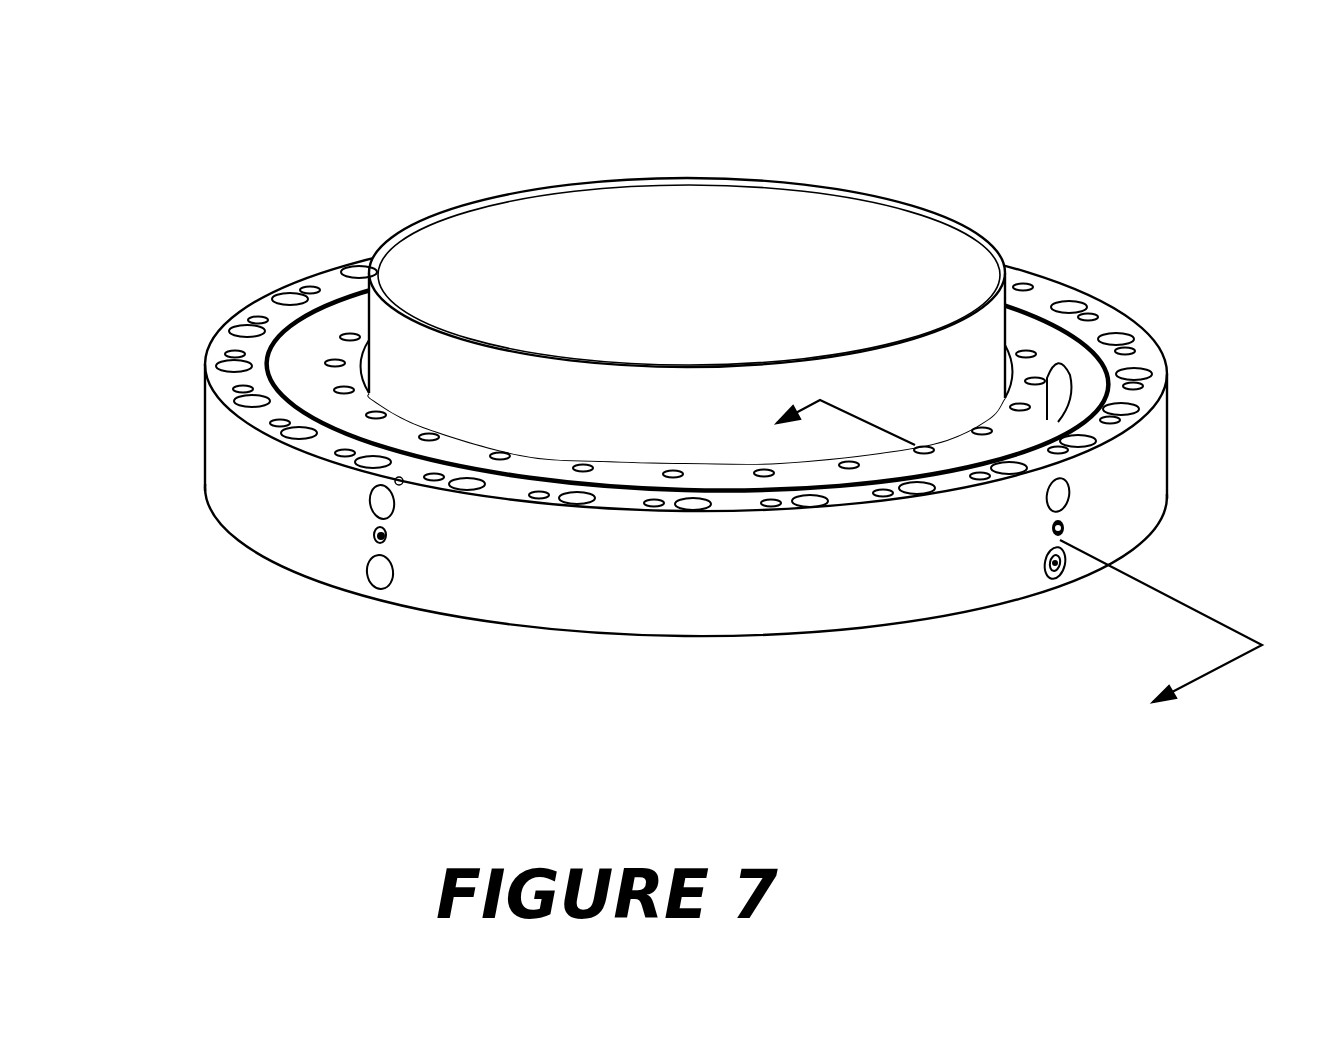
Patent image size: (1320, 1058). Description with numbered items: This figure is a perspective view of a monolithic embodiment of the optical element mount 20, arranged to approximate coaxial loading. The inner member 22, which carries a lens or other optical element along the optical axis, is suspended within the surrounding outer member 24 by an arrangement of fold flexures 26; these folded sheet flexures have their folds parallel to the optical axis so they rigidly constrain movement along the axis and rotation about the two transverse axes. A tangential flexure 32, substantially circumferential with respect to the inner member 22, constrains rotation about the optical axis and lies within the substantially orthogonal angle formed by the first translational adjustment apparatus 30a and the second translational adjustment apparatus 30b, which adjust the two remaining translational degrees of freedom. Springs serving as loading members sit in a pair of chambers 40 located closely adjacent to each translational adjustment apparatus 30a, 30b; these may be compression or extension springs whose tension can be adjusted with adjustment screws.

The optical element mount 20 is at (705, 403).
The inner member 22 is at (870, 218).
The outer member 24 is at (1105, 300).
The fold flexures 26 is at (355, 427).
The first translational adjustment apparatus 30a is at (1060, 527).
The second translational adjustment apparatus 30b is at (375, 532).
The tangential flexure 32 is at (693, 492).
The chambers 40 is at (384, 507).